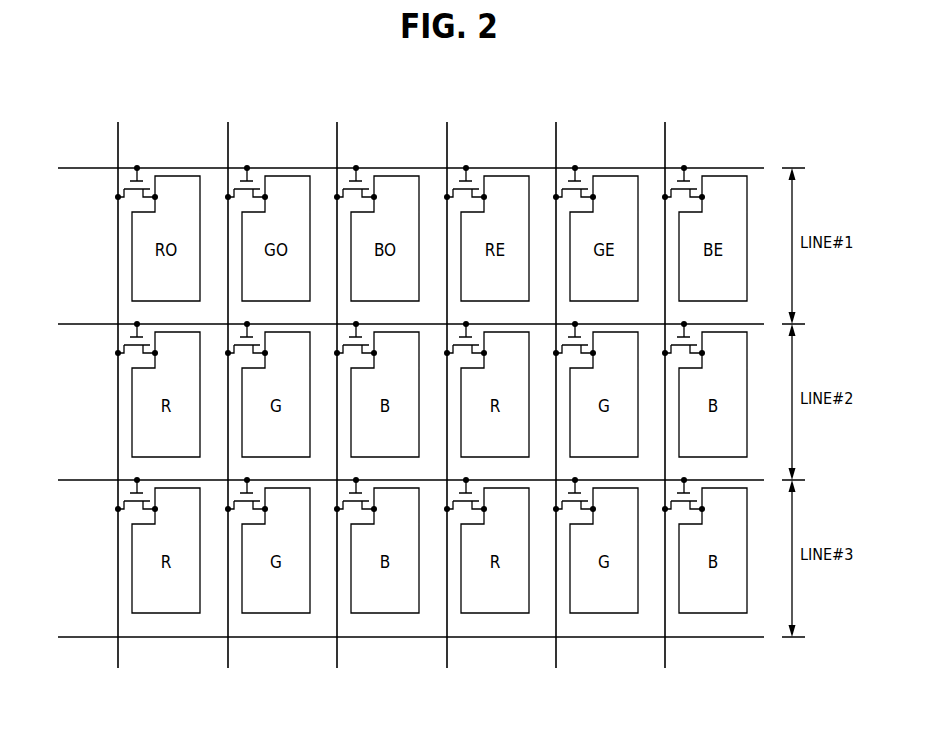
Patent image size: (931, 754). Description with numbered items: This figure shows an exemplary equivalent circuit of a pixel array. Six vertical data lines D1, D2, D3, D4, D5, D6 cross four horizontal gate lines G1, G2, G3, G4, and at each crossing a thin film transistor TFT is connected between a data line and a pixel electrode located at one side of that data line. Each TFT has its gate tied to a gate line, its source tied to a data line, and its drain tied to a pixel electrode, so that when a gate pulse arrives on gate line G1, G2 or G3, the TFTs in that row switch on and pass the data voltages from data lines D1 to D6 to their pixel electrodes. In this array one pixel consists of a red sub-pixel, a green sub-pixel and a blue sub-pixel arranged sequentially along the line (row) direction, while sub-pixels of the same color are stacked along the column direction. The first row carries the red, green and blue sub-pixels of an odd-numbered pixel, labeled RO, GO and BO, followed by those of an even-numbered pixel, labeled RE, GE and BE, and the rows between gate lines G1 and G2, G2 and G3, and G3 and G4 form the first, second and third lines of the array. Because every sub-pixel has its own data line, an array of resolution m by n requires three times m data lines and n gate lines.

The thin film transistor TFT is at (151, 173).
The data line D1 is at (118, 385).
The data line D2 is at (228, 385).
The data line D3 is at (337, 385).
The data line D4 is at (447, 385).
The data line D5 is at (556, 385).
The data line D6 is at (665, 385).
The gate line G1 is at (400, 168).
The gate line G2 is at (400, 324).
The gate line G3 is at (400, 480).
The gate line G4 is at (400, 637).